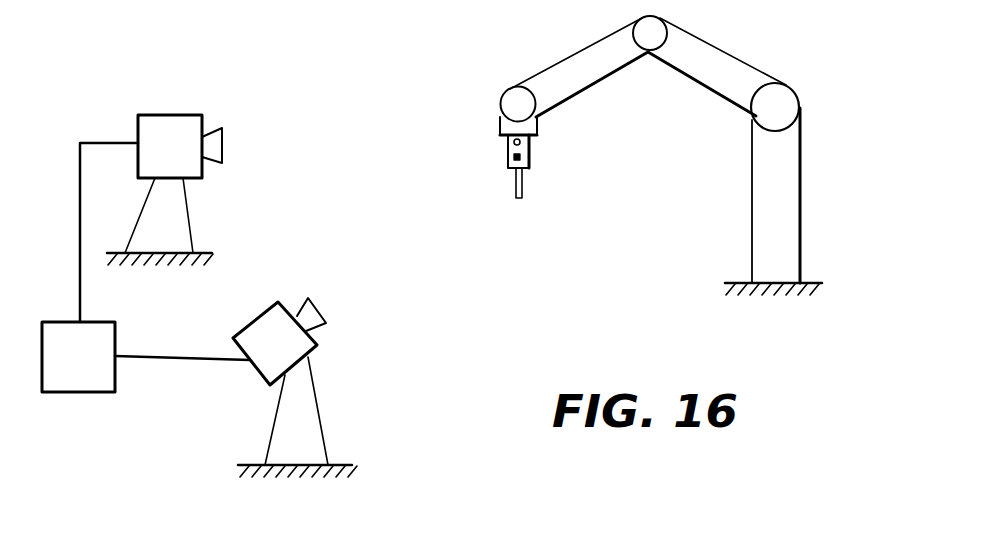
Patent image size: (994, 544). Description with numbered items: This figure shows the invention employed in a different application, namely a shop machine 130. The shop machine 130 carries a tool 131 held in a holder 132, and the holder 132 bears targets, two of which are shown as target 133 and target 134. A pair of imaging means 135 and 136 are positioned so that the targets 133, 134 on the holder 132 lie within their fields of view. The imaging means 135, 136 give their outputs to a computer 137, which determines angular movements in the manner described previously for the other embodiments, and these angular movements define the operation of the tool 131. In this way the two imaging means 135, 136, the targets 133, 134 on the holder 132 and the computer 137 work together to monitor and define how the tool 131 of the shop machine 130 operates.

The shop machine 130 is at (808, 159).
The tool 131 is at (523, 182).
The holder 132 is at (530, 148).
The target 133 is at (513, 140).
The target 134 is at (513, 157).
The imaging means 135 is at (148, 157).
The imaging means 136 is at (295, 354).
The computer 137 is at (55, 366).